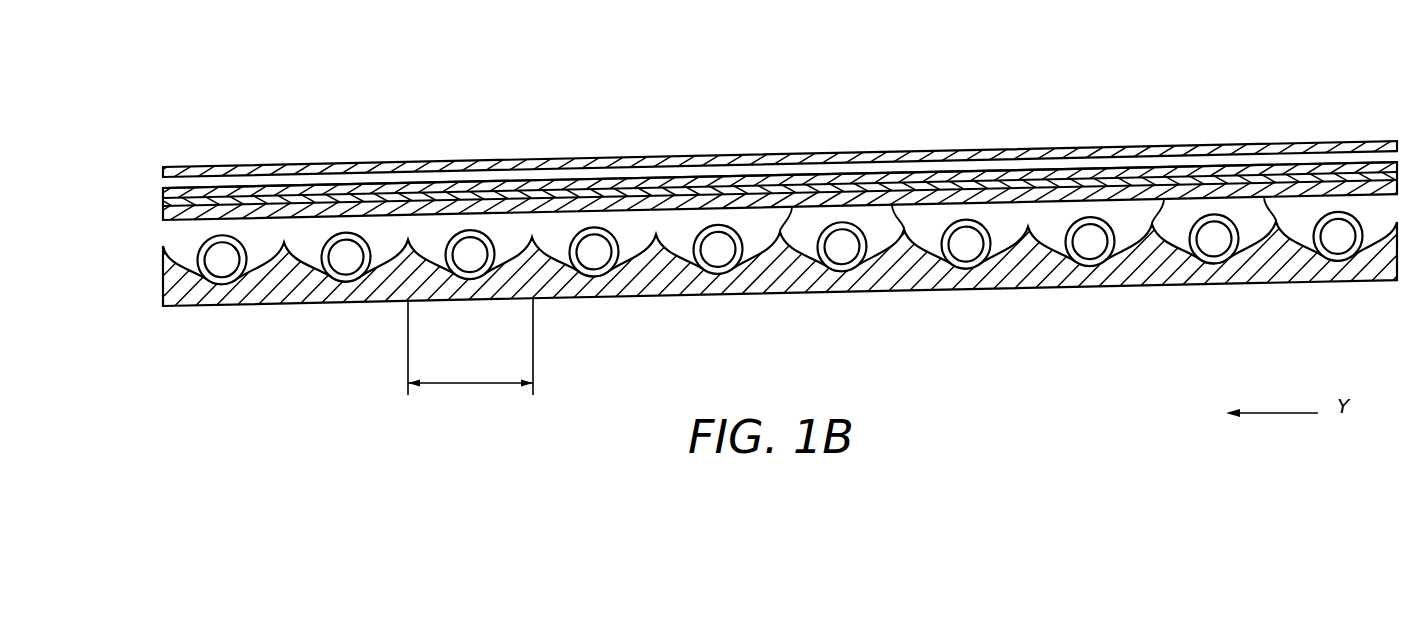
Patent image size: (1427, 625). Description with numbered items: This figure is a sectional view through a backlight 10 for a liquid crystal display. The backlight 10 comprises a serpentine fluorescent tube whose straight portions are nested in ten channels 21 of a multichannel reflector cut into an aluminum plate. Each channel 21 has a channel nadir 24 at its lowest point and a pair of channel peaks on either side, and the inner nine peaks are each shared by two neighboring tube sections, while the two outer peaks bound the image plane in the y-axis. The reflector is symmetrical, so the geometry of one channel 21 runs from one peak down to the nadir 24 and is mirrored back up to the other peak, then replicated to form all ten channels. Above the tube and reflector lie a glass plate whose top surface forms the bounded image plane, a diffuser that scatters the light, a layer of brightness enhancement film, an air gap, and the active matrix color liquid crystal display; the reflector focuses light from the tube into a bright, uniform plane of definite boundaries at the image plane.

The backlight 10 is at (238, 138).
The reflector channel 21 is at (478, 384).
The channel nadir 24 is at (718, 276).